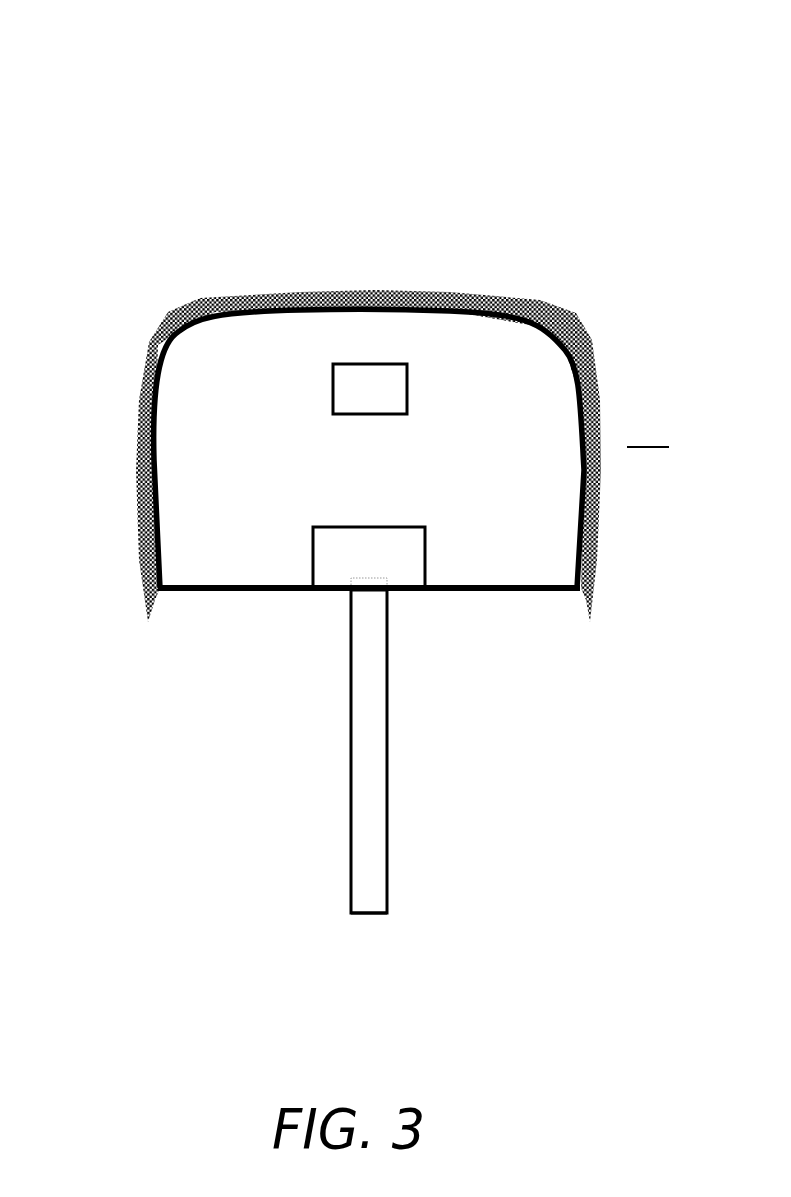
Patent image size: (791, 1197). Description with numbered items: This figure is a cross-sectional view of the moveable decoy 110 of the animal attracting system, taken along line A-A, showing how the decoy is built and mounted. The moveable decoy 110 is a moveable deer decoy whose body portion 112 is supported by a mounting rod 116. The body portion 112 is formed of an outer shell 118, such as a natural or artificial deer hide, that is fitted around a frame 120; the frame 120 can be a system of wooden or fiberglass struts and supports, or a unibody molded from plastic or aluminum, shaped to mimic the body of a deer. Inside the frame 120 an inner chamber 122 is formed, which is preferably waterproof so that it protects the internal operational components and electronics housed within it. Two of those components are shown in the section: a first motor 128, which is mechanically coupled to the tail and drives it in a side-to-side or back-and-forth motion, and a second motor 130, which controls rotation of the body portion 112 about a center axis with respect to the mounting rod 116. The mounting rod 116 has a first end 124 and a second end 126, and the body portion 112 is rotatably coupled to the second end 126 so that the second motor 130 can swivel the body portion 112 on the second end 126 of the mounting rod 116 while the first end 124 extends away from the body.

The moveable decoy 110 is at (118, 78).
The body portion 112 is at (434, 278).
The mounting rod 116 is at (389, 788).
The outer shell 118 is at (203, 305).
The frame 120 is at (268, 587).
The inner chamber 122 is at (503, 461).
The first end 124 is at (349, 903).
The second end 126 is at (348, 596).
The first motor 128 is at (390, 402).
The second motor 130 is at (390, 562).